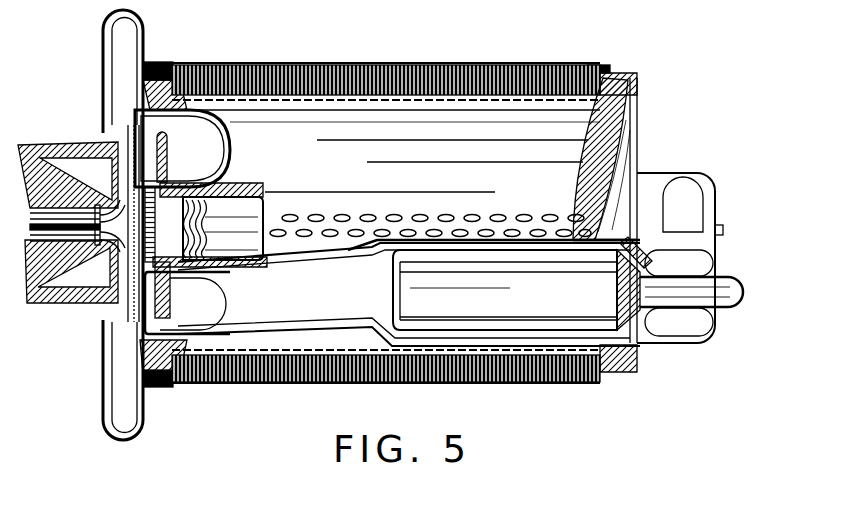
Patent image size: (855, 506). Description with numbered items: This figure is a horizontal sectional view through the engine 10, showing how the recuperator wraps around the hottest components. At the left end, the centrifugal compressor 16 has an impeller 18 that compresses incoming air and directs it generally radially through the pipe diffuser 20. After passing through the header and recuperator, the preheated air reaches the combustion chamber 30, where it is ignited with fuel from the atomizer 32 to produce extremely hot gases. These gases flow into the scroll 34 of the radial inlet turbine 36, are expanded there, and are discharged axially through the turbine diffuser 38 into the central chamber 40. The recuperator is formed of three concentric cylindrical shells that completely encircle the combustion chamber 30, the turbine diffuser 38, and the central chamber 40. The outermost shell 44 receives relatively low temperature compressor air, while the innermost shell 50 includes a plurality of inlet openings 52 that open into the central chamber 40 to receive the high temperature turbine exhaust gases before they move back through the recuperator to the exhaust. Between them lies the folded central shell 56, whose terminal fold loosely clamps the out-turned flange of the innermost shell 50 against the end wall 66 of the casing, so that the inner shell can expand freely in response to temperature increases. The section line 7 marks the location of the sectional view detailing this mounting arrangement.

The section line for FIG. 7 is at (575, 386).
The engine 10 is at (643, 66).
The centrifugal compressor 16 is at (71, 271).
The impeller 18 is at (68, 175).
The pipe diffuser 20 is at (107, 110).
The combustion chamber 30 is at (545, 311).
The atomizer 32 is at (742, 297).
The scroll 34 is at (208, 148).
The radial inlet turbine 36 is at (172, 182).
The turbine diffuser 38 is at (265, 197).
The central chamber 40 is at (424, 189).
The outermost shell 44 is at (465, 65).
The innermost shell 50 is at (412, 65).
The inlet openings 52 is at (528, 211).
The central shell 56 is at (355, 65).
The end wall 66 is at (641, 157).